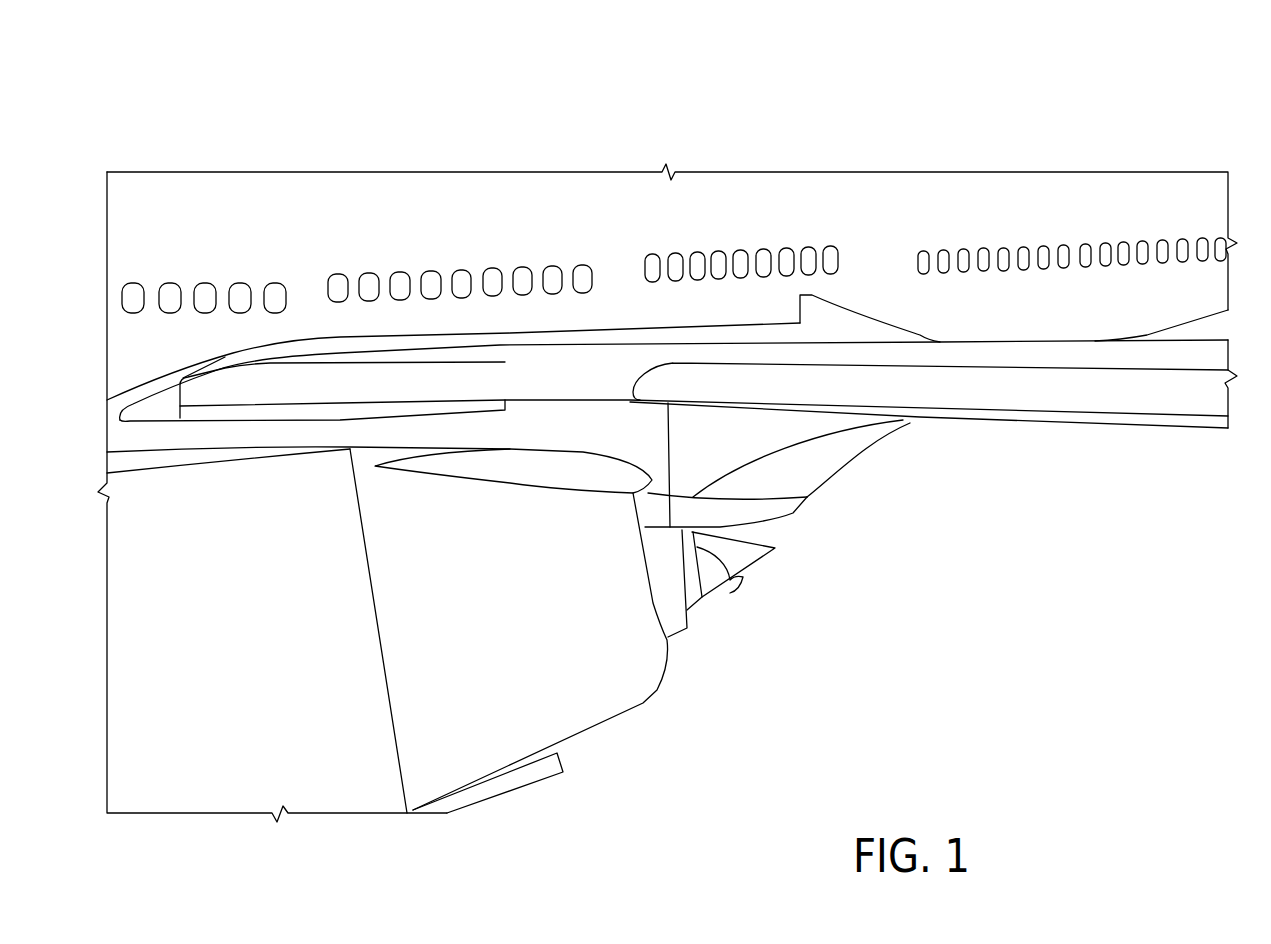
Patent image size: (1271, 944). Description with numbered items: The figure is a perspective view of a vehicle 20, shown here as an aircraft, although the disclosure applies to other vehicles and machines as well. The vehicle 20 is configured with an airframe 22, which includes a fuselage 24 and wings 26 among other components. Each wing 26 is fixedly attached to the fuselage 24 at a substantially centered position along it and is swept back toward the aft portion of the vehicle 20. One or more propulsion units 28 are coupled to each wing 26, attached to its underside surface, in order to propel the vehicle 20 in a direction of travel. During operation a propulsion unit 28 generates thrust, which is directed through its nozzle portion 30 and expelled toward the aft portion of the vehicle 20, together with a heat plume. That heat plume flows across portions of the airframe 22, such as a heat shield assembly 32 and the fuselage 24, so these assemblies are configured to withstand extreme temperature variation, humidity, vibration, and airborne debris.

The vehicle 20 is at (193, 123).
The airframe 22 is at (1127, 138).
The fuselage 24 is at (600, 232).
The wing 26 is at (1155, 402).
The propulsion unit 28 is at (438, 763).
The nozzle portion 30 is at (717, 580).
The heat shield assembly 32 is at (777, 512).